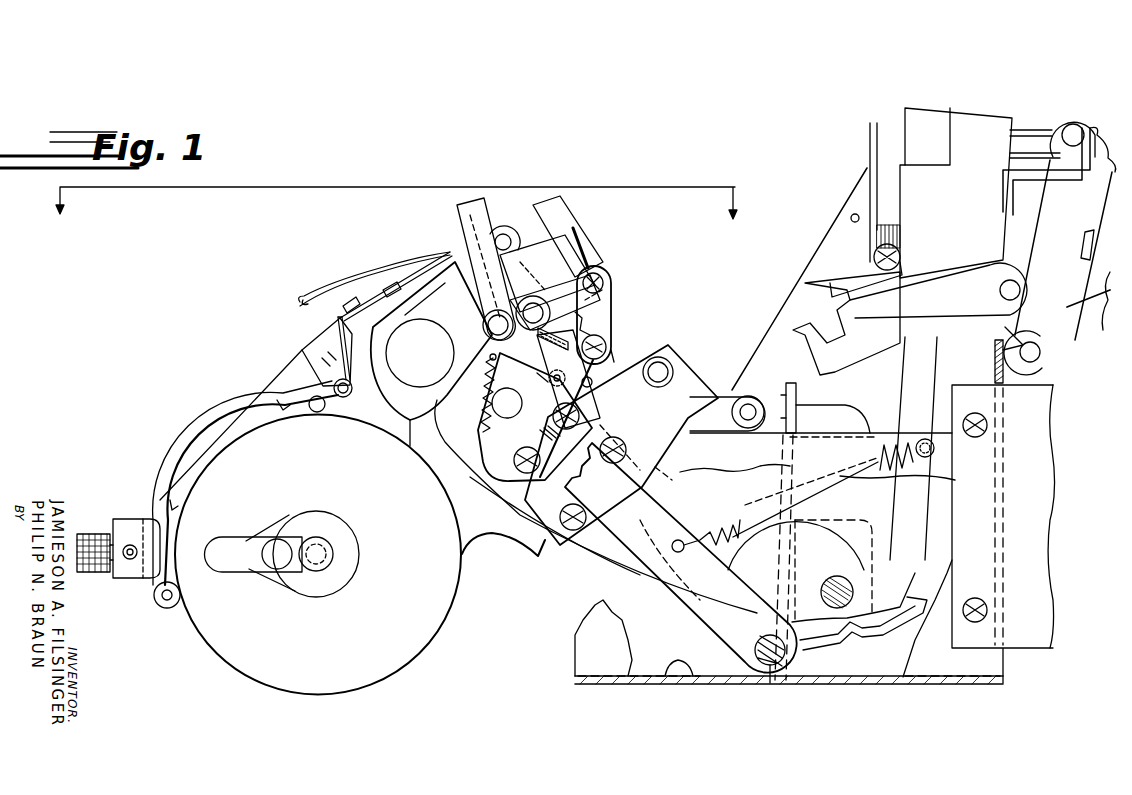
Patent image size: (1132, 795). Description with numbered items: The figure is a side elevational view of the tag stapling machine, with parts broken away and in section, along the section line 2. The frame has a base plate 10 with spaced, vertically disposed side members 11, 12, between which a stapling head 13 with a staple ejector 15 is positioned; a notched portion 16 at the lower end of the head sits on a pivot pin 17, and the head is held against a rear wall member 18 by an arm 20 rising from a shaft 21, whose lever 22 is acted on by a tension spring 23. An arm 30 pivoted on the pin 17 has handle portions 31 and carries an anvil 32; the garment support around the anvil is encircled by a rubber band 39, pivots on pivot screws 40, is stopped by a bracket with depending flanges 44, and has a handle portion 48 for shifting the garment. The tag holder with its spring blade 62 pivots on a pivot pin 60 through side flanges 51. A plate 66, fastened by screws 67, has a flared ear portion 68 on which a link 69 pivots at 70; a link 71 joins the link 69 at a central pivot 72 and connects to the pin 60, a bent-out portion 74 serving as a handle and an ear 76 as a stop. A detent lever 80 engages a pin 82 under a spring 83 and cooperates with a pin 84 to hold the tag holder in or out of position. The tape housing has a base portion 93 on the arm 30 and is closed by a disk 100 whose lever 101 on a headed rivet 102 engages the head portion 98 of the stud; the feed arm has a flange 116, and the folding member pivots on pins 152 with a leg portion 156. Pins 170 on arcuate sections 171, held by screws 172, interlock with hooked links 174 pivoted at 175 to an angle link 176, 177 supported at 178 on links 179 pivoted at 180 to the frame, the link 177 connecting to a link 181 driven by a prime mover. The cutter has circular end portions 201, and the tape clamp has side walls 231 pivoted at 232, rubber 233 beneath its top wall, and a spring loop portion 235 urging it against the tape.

The section line 2- 2 is at (395, 215).
The base plate 10 is at (820, 684).
The side member 11 is at (815, 534).
The side member 12 is at (817, 401).
The stapling head 13 is at (956, 193).
The staple ejector 15 is at (1030, 120).
The notched portion 16 is at (820, 650).
The pivot pin 17 is at (825, 575).
The rear wall member 18 is at (1010, 338).
The arm 20 is at (798, 417).
The shaft 21 is at (770, 683).
The lever 22 is at (681, 558).
The tension spring 23 is at (728, 518).
The arm 30 is at (623, 568).
The handle portions 31 is at (431, 341).
The anvil 32 is at (462, 293).
The rubber band 39 is at (548, 205).
The pivot screws 40 is at (547, 273).
The depending flanges 44 is at (545, 298).
The handle portion 48 is at (330, 285).
The side flanges 51 is at (555, 302).
The pivot pin 60 is at (600, 280).
The spring blade 62 is at (590, 248).
The plate 66 is at (502, 462).
The screws 67 is at (525, 473).
The ear portion 68 is at (580, 430).
The link 69 is at (612, 356).
The pivot 70 is at (553, 416).
The link 71 is at (605, 320).
The pivot 72 is at (605, 340).
The bent-out portion 74 is at (553, 344).
The ear 76 is at (589, 317).
The detent lever 80 is at (532, 364).
The pin 82 is at (560, 390).
The spring 83 is at (480, 398).
The pin 84 is at (608, 395).
The base portion 93 is at (455, 497).
The head portion 98 is at (321, 547).
The disk 100 is at (318, 555).
The lever 101 is at (240, 543).
The headed rivet 102 is at (277, 566).
The flange 116 is at (130, 578).
The pins 152 is at (483, 323).
The leg portion 156 is at (470, 228).
The pins 170 is at (668, 368).
The arcuate sections 171 is at (645, 445).
The screws 172 is at (618, 460).
The links 174 is at (865, 416).
The pivot 175 is at (998, 290).
The angle link 176 is at (1040, 208).
The angle link 177 is at (1111, 157).
The pivot 178 is at (1073, 124).
The links 179 is at (1063, 250).
The pivot 180 is at (1046, 362).
The link 181 is at (1116, 280).
The circular end portions 201 is at (505, 234).
The side walls 231 is at (305, 362).
The pivot 232 is at (333, 410).
The rubber 233 is at (363, 318).
The loop portion 235 is at (335, 330).